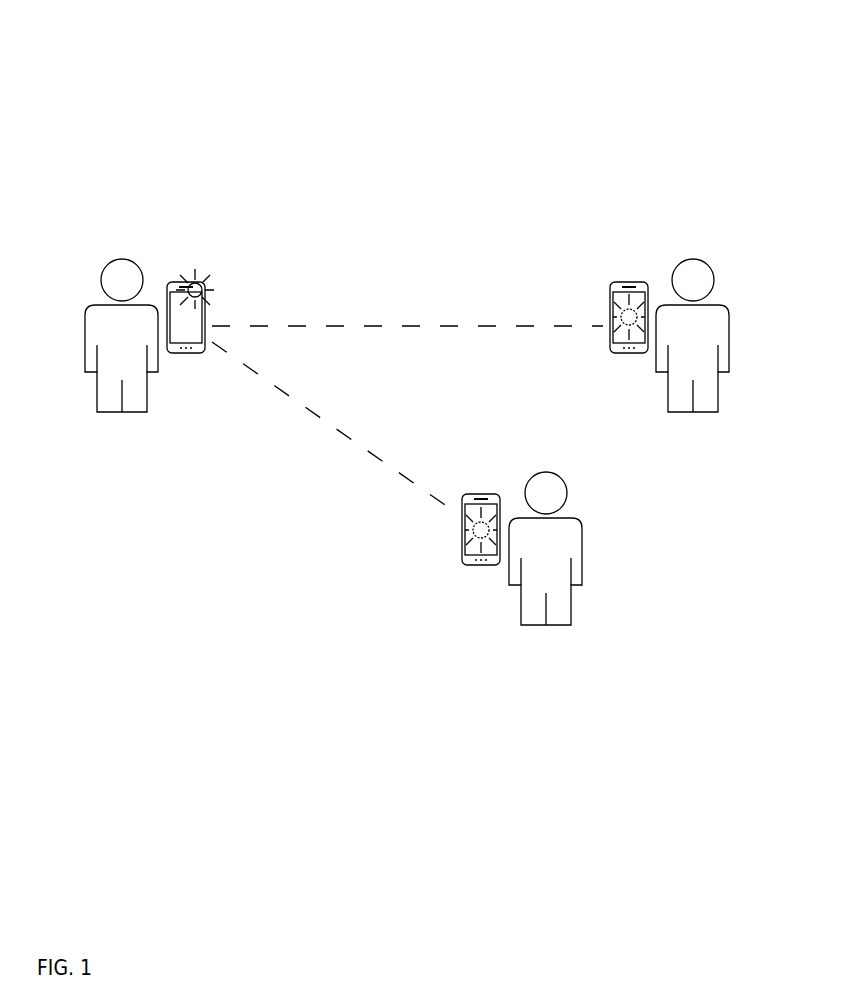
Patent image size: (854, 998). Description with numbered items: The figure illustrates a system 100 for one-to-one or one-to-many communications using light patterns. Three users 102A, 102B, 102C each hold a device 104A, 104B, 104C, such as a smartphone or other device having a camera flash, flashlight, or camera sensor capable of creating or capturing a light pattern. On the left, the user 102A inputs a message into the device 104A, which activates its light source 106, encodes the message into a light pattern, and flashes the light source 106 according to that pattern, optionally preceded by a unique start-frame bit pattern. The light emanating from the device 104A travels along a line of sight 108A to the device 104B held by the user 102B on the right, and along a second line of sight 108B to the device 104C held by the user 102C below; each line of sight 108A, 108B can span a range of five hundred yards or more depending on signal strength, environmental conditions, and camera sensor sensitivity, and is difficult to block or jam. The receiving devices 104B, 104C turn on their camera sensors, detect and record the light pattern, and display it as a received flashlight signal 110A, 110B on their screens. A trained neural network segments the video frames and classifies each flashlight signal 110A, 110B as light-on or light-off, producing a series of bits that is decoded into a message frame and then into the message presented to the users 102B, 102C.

The system 100 is at (615, 143).
The user 102A is at (82, 292).
The user 102B is at (758, 278).
The user 102C is at (593, 533).
The device 104A is at (167, 268).
The device 104B is at (598, 287).
The device 104C is at (467, 482).
The light source 106 is at (230, 260).
The line of sight 108A is at (407, 326).
The line of sight 108B is at (317, 425).
The received flashlight signal 110A is at (617, 327).
The received flashlight signal 110B is at (468, 528).